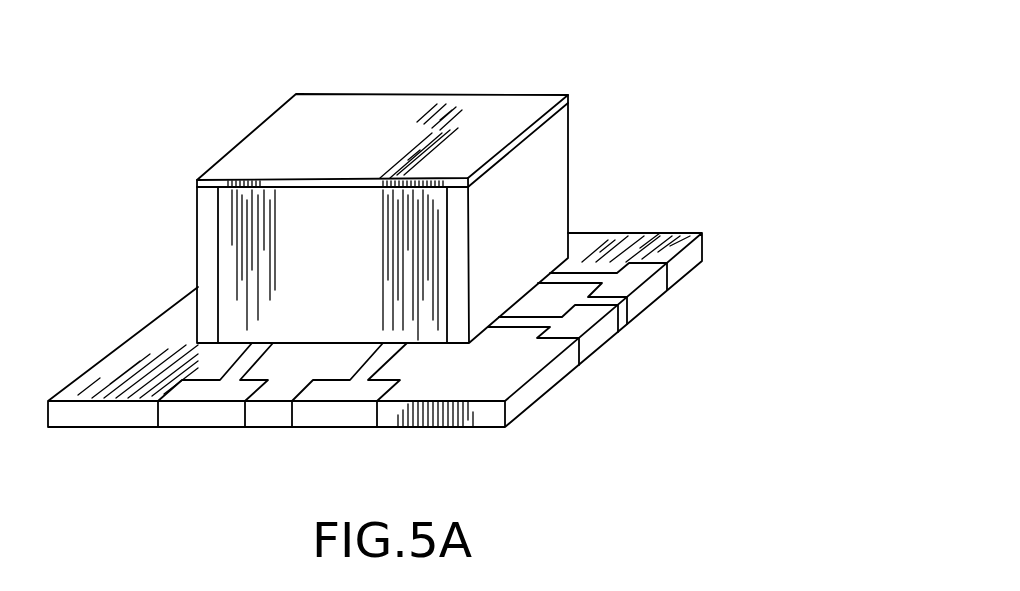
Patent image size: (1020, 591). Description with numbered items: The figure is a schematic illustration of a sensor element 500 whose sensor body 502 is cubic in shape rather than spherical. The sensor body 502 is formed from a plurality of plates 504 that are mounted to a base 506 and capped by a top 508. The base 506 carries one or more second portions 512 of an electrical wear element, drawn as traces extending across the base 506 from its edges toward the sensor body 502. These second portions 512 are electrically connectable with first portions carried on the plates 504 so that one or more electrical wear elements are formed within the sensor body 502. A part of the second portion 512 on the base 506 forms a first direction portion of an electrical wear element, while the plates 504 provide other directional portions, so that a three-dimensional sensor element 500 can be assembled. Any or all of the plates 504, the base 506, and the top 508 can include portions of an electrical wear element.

The sensor element 500 is at (141, 80).
The sensor body 502 is at (592, 142).
The plates 504 is at (207, 246).
The base 506 is at (120, 365).
The top 508 is at (353, 147).
The second portions of the electrical wear element 512 is at (202, 416).